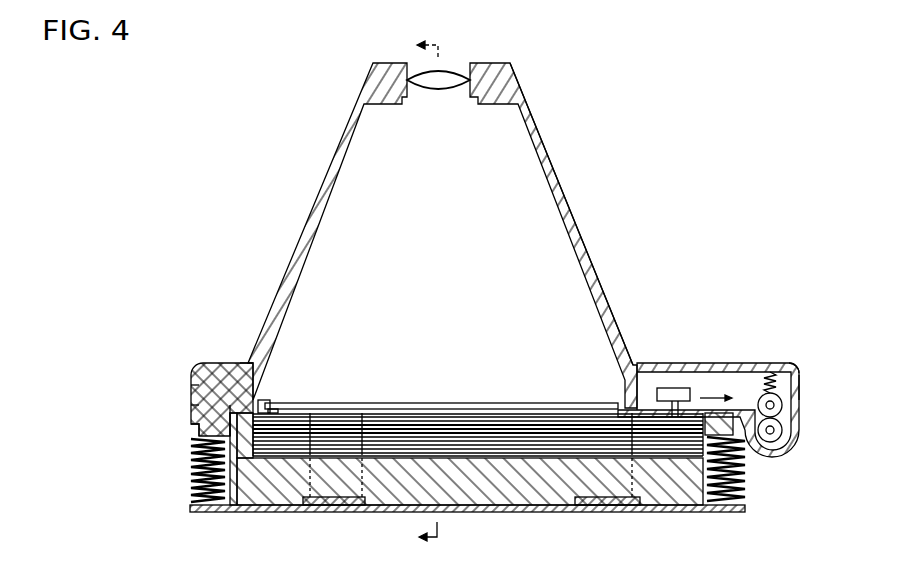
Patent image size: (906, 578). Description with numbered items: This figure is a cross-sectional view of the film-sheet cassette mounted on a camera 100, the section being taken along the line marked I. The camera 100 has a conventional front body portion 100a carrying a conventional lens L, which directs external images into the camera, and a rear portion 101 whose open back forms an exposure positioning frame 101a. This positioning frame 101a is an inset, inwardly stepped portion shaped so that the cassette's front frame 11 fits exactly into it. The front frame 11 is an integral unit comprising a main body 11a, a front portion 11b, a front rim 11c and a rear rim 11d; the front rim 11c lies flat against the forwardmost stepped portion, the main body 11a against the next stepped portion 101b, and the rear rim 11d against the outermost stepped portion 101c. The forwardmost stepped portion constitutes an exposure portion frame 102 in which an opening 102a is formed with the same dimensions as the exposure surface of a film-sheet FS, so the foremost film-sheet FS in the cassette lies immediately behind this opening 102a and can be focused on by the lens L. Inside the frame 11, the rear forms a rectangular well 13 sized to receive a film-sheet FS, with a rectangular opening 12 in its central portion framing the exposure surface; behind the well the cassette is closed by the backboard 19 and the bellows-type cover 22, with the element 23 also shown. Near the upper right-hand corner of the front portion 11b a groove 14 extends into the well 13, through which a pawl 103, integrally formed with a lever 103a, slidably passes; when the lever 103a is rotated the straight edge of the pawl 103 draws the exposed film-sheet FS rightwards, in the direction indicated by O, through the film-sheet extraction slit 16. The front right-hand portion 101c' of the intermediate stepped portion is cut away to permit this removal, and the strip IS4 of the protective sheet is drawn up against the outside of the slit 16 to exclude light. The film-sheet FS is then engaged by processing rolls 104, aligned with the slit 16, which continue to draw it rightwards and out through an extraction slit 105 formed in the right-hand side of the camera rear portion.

The camera 100 is at (316, 196).
The front body portion 100a is at (547, 161).
The lens L is at (440, 70).
The section line I- I is at (420, 290).
The front frame 11 is at (222, 378).
The main body 11a is at (232, 402).
The front portion 11b is at (250, 366).
The front rim 11c is at (270, 409).
The rear rim 11d is at (198, 434).
The next stepped portion 101b is at (200, 396).
The outermost stepped portion 101c is at (157, 393).
The front right-hand portion 101c' is at (808, 399).
The well 13 is at (228, 456).
The bellows-type cover 22 is at (196, 468).
The backboard 19 is at (531, 483).
The bracket strip 23 is at (339, 501).
The rectangular opening 12 is at (382, 414).
The opening 102a is at (500, 432).
The film-sheet FS is at (492, 433).
The exposure portion frame 102 is at (606, 405).
The exposure positioning frame 101a is at (263, 400).
The rear portion 101 is at (672, 364).
The pawl 103 is at (664, 390).
The lever 103a is at (690, 390).
The direction arrow O is at (716, 385).
The film-sheet extraction slit 16 is at (737, 416).
The strip IS4 is at (788, 370).
The processing rolls 104 is at (799, 383).
The extraction slit 105 is at (783, 428).
The groove 14 is at (737, 436).